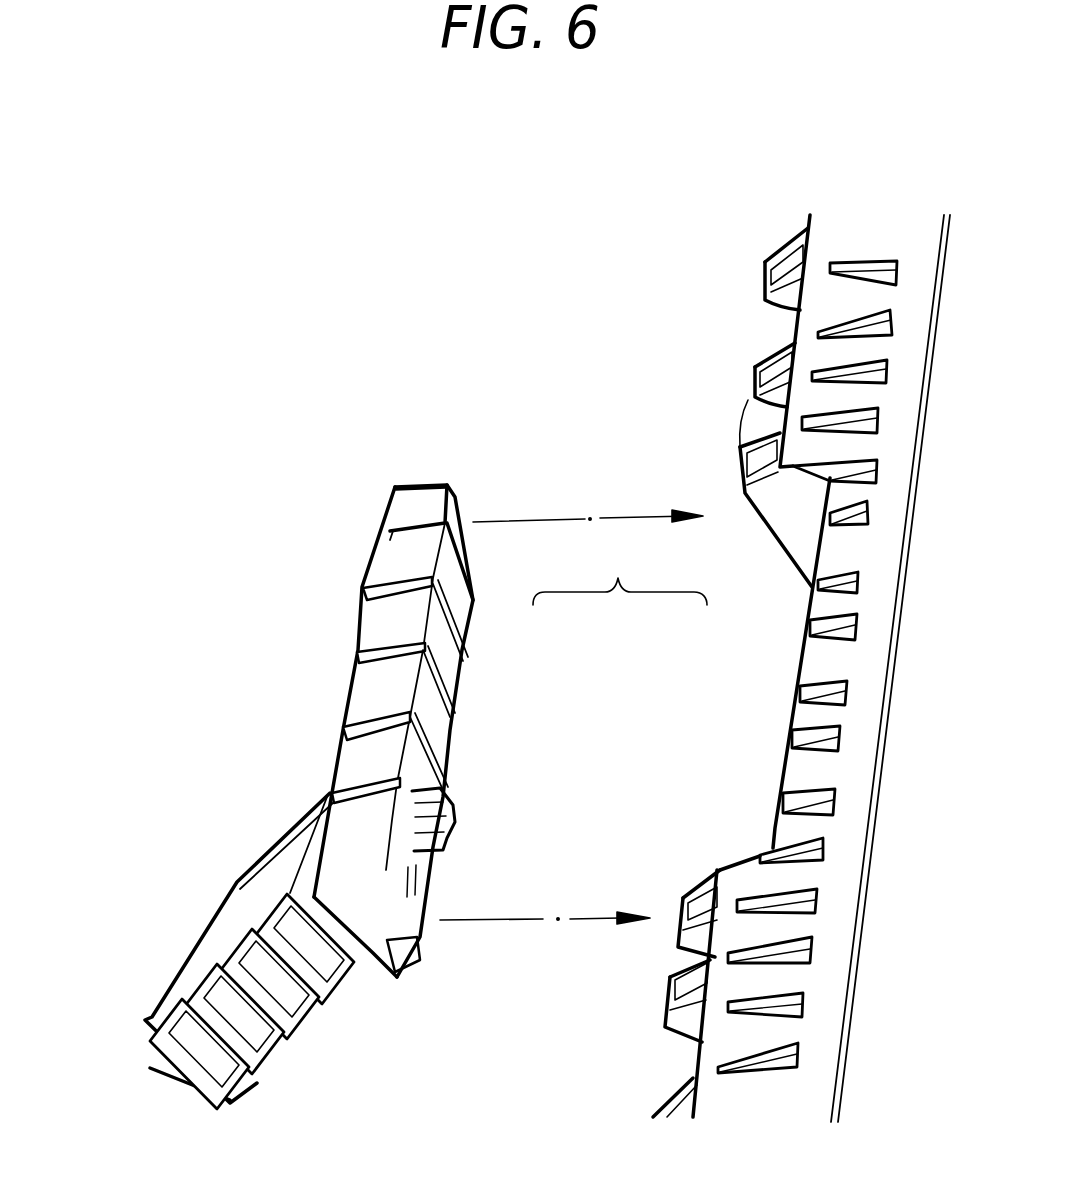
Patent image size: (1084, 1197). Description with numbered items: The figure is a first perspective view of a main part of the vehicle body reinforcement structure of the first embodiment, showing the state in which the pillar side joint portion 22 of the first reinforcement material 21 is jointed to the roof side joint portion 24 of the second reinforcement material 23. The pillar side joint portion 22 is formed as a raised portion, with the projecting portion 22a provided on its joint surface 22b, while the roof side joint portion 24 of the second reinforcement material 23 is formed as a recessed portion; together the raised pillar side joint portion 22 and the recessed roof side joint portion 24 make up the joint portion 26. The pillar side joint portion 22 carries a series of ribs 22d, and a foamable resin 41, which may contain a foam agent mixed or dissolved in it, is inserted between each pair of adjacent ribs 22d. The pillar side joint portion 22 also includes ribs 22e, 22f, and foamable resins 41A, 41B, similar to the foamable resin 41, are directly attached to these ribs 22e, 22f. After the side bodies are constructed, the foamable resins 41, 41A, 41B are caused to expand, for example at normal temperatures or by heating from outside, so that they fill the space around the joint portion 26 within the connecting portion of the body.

The first reinforcement material 21 is at (205, 860).
The pillar side joint portion 22 is at (482, 670).
The projecting portion 22a is at (450, 843).
The joint surface 22b is at (478, 596).
The ribs 22d is at (455, 655).
The rib 22e is at (418, 486).
The rib 22f is at (383, 903).
The second reinforcement material 23 is at (728, 368).
The roof side joint portion 24 is at (775, 663).
The joint portion 26 is at (620, 569).
The foamable resin 41 is at (376, 625).
The foamable resin 41A is at (400, 553).
The foamable resin 41B is at (432, 888).